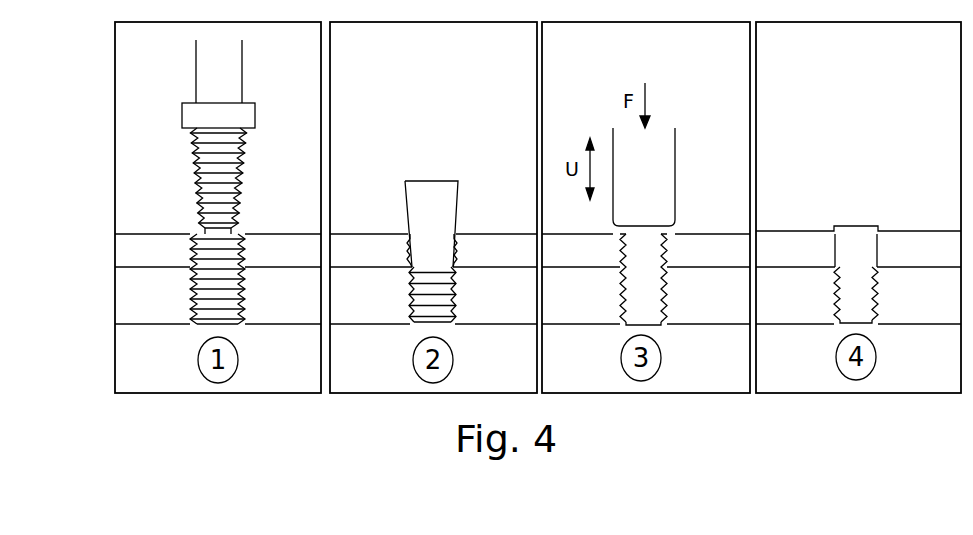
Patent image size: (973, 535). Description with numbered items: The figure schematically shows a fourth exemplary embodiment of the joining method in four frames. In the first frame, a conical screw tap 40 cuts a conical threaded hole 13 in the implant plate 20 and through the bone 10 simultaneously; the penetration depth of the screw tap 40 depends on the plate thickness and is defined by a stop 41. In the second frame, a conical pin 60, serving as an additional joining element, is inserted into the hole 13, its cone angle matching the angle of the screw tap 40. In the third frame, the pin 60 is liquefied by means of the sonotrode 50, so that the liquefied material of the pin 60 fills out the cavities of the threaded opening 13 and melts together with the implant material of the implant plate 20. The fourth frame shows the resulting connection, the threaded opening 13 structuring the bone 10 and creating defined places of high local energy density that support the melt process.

The bone 10 is at (130, 291).
The conical threaded hole 13 is at (198, 300).
The implant plate 20 is at (130, 245).
The conical screw tap 40 is at (206, 62).
The stop 41 is at (255, 130).
The sonotrode 50 is at (618, 150).
The conical pin 60 is at (434, 190).